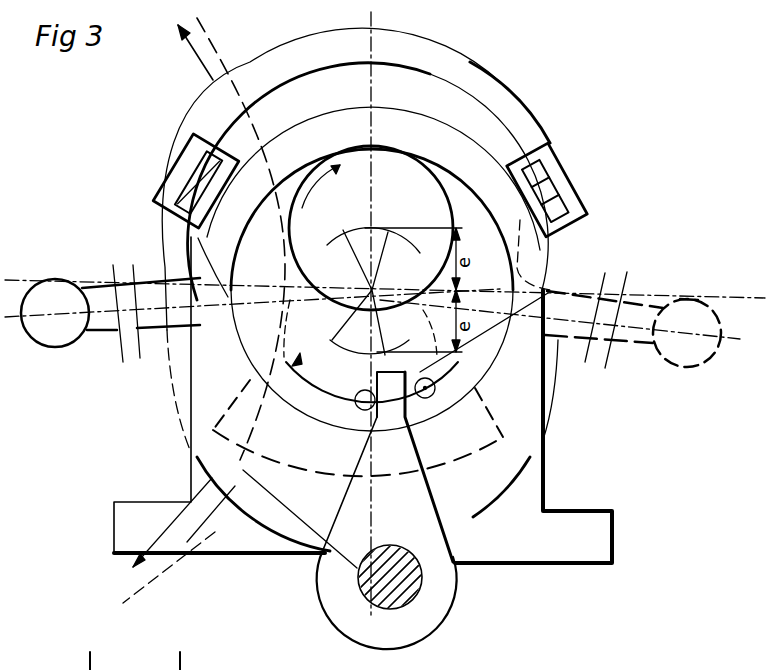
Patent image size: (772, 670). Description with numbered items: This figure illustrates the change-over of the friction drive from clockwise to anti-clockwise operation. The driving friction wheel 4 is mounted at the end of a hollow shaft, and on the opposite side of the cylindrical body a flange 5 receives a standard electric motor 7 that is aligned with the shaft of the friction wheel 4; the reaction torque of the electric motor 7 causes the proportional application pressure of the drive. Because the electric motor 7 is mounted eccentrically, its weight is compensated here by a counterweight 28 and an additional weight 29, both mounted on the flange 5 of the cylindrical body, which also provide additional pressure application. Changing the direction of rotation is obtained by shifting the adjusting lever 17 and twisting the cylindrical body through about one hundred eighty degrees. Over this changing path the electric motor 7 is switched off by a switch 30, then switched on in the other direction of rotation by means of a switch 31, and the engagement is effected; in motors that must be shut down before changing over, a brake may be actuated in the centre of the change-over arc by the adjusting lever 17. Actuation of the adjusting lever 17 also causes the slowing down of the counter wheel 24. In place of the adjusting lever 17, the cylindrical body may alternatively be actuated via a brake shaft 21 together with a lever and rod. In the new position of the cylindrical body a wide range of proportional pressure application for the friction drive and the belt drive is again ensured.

The friction wheel 4 is at (382, 172).
The flange 5 is at (399, 88).
The electric motor 7 is at (456, 67).
The adjusting lever 17 is at (62, 297).
The brake shaft 21 is at (440, 615).
The counter wheel 24 is at (220, 45).
The counterweight 28 is at (452, 420).
The additional weight 29 is at (257, 408).
The switch 30 is at (173, 185).
The switch 31 is at (570, 196).